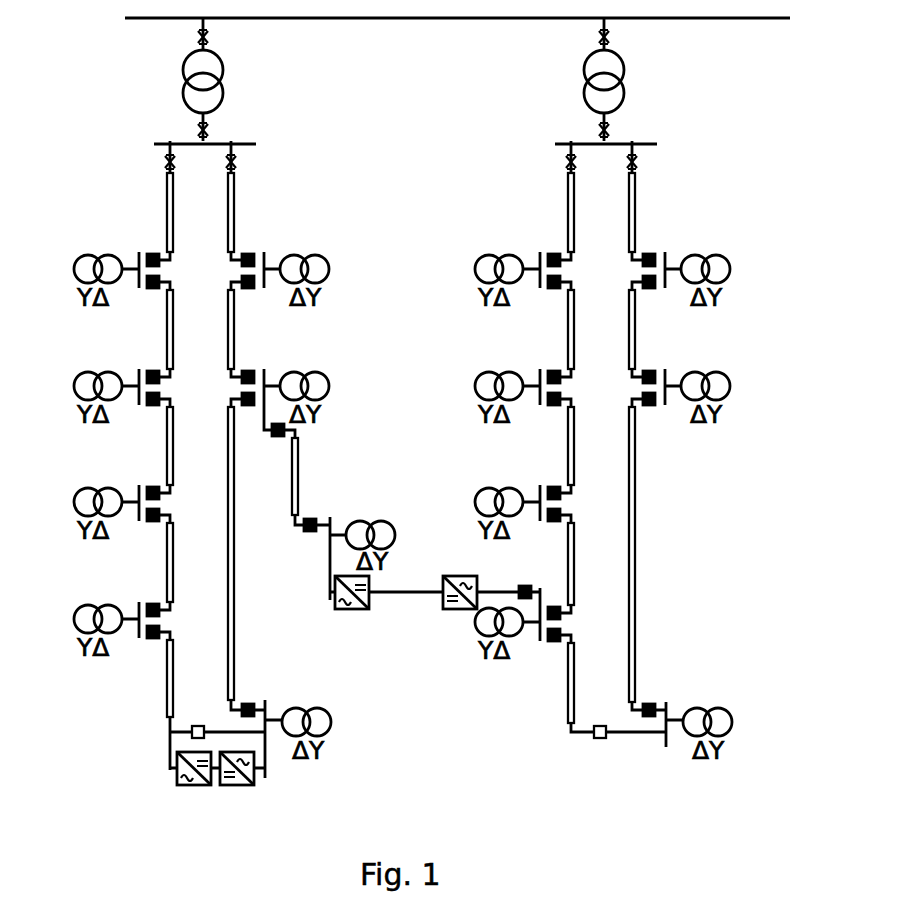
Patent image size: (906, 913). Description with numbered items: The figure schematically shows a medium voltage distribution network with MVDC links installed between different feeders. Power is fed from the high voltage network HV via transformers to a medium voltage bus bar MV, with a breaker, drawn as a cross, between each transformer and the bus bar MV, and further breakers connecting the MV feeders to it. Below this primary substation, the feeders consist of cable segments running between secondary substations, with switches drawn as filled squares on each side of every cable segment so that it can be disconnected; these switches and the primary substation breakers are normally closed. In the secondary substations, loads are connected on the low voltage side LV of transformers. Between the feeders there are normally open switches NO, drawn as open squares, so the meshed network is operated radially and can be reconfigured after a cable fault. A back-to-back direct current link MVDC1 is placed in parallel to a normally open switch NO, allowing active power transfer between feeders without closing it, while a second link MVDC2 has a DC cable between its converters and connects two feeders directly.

The high voltage network HV is at (438, 13).
The medium voltage bus bar MV is at (371, 133).
The low voltage side of transformers LV is at (102, 279).
The normally open switch NO is at (396, 715).
The back-to-back direct current link MVDC1 is at (228, 787).
The direct current link with DC cable MVDC2 is at (406, 613).